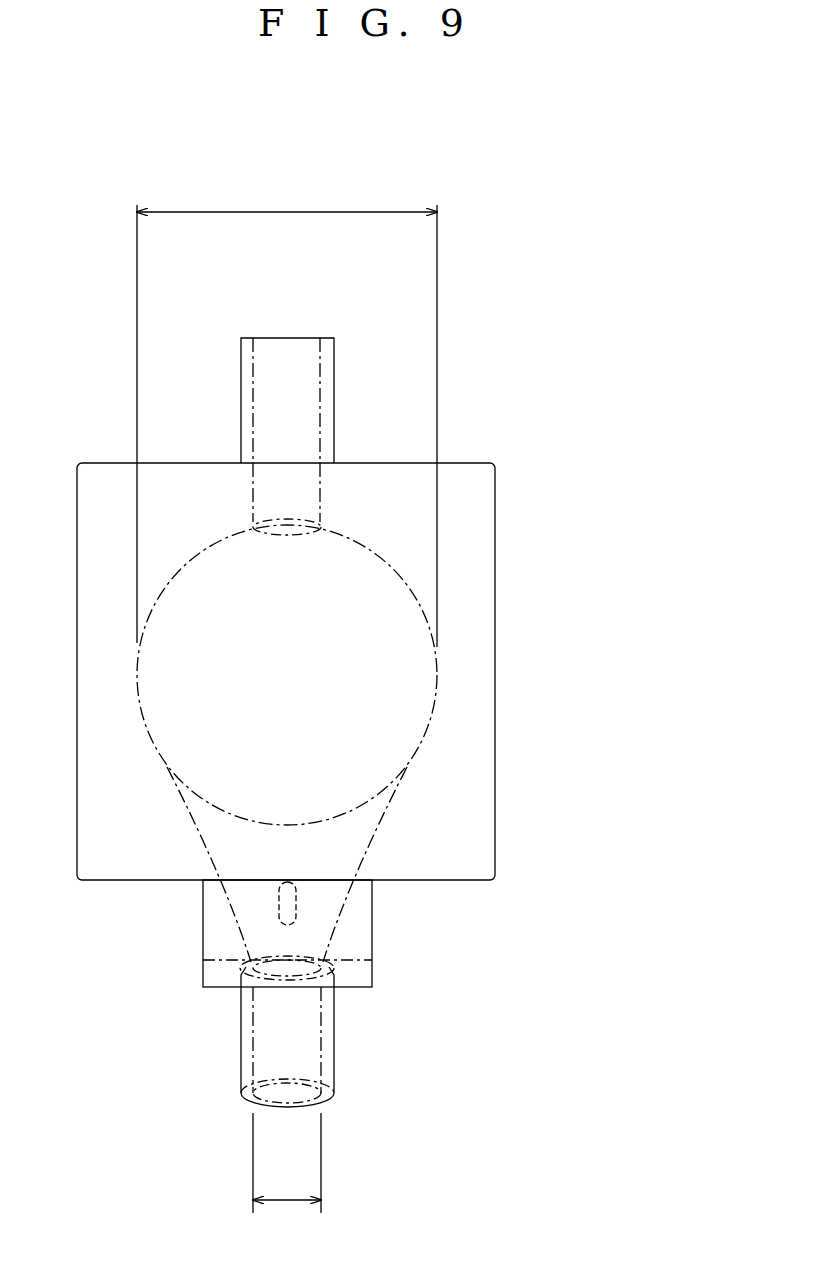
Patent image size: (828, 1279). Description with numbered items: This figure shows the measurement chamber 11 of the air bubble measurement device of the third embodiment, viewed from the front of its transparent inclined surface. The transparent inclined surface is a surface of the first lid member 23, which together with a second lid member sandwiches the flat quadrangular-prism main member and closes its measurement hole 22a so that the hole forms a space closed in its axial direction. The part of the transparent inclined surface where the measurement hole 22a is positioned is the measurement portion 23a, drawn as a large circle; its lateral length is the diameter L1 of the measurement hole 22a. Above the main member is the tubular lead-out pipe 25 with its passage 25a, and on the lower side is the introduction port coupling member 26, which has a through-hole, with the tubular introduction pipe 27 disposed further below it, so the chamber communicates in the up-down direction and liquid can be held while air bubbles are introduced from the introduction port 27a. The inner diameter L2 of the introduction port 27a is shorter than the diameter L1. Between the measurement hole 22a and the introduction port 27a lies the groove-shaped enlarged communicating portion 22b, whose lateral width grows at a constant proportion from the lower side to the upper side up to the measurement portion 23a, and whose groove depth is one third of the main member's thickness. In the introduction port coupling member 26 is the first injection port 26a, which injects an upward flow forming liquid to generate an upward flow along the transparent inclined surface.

The measurement chamber 11 is at (513, 278).
The diameter of the measurement hole L1 is at (287, 412).
The diameter of the inner surface of the introduction port L2 is at (287, 1163).
The first lid member 23 is at (470, 575).
The measurement portion 23a is at (327, 702).
The measurement hole 22a is at (287, 675).
The enlarged communicating portion 22b is at (327, 843).
The lead-out pipe 25 is at (326, 396).
The first passage 25a is at (288, 374).
The introduction port coupling member 26 is at (350, 950).
The first injection port 26a is at (287, 913).
The introduction pipe 27 is at (326, 1060).
The introduction port 27a is at (286, 1022).